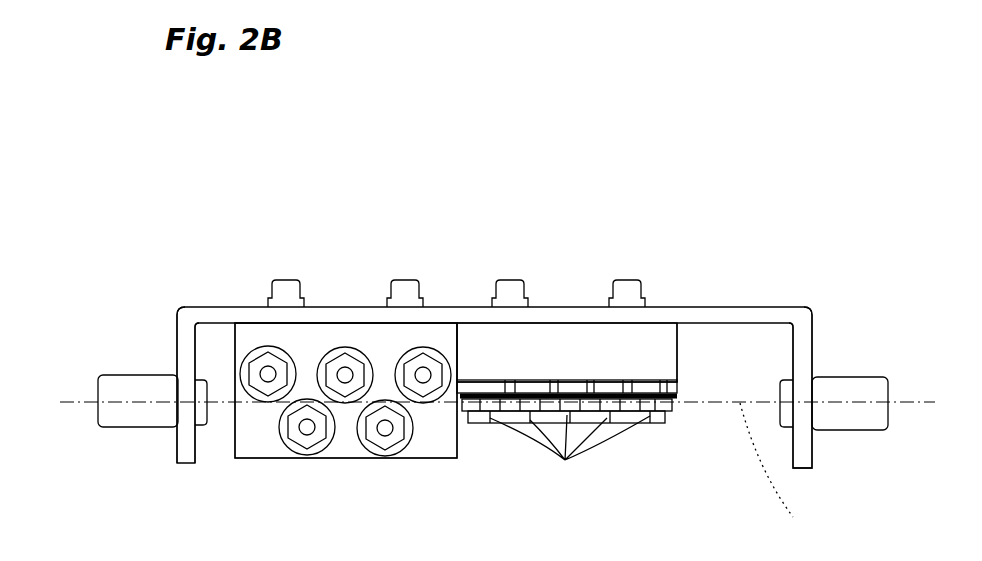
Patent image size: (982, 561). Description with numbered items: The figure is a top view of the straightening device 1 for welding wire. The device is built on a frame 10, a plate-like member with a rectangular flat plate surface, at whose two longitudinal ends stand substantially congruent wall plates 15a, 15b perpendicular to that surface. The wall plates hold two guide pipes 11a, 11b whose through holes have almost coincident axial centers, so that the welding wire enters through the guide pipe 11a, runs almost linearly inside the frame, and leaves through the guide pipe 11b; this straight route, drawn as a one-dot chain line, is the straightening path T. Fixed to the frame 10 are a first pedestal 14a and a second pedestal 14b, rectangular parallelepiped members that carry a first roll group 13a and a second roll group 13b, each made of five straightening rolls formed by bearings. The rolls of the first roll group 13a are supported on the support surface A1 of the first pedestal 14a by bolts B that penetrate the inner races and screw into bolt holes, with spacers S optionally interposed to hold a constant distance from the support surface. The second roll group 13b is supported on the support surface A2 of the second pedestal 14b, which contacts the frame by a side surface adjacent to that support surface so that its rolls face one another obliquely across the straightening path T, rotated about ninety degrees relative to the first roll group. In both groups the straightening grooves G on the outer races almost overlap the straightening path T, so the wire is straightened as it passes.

The straightening device 1 is at (495, 232).
The frame 10 is at (712, 307).
The guide pipe 11a is at (835, 377).
The guide pipe 11b is at (122, 374).
The first roll group 13a is at (567, 362).
The second roll group 13b is at (353, 335).
The first pedestal 14a is at (683, 357).
The second pedestal 14b is at (235, 440).
The wall plate 15a is at (789, 337).
The wall plate 15b is at (195, 342).
The support surface A1 is at (672, 410).
The support surface A2 is at (253, 333).
The bolt B is at (280, 358).
The spacer S is at (473, 388).
The straightening groove G is at (565, 460).
The straightening path T is at (775, 470).